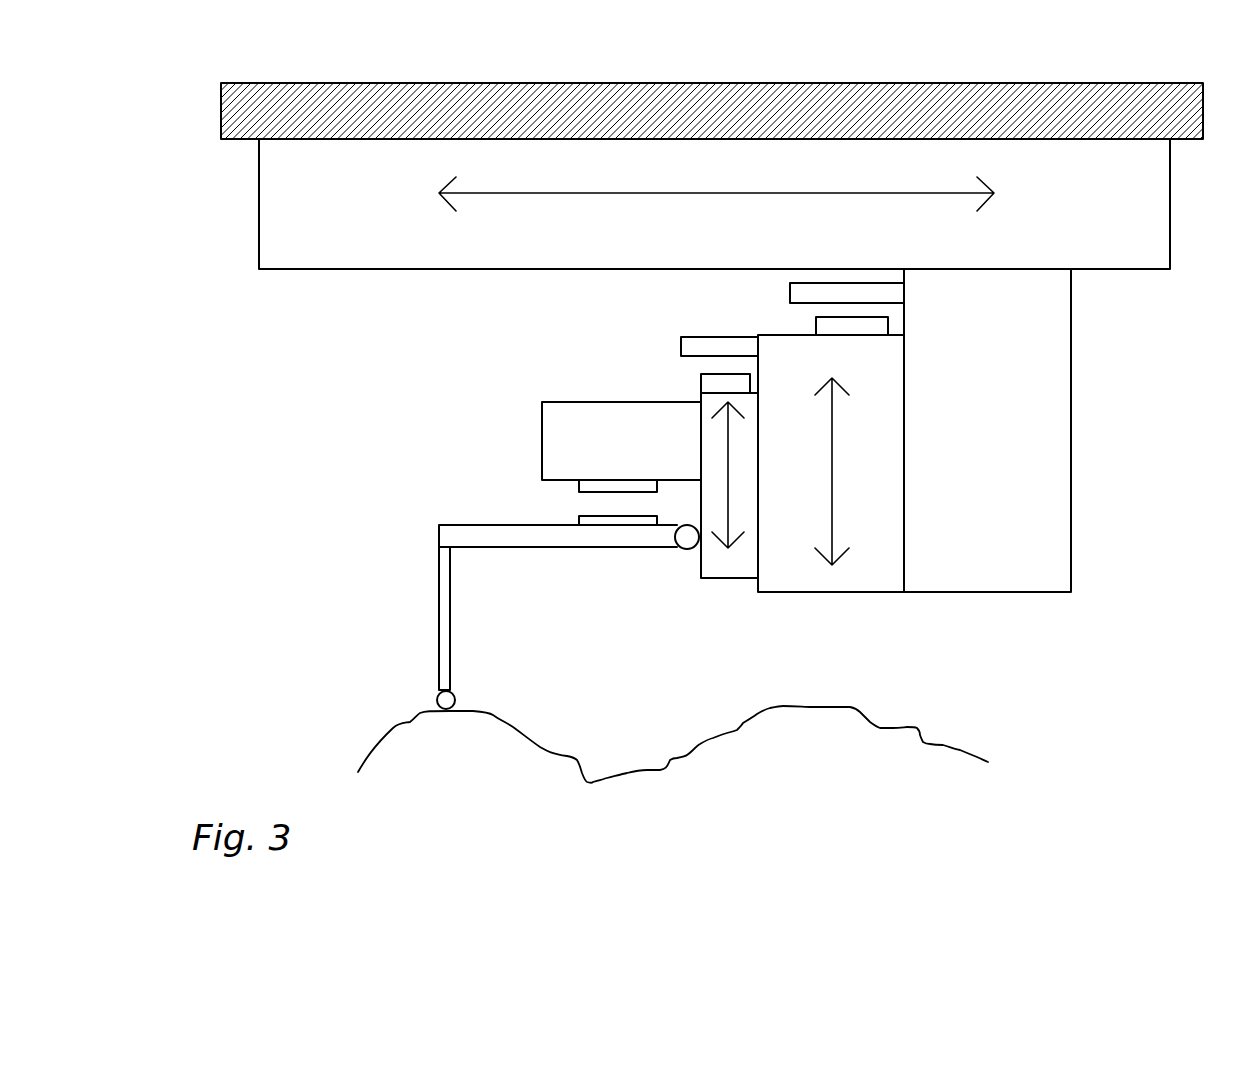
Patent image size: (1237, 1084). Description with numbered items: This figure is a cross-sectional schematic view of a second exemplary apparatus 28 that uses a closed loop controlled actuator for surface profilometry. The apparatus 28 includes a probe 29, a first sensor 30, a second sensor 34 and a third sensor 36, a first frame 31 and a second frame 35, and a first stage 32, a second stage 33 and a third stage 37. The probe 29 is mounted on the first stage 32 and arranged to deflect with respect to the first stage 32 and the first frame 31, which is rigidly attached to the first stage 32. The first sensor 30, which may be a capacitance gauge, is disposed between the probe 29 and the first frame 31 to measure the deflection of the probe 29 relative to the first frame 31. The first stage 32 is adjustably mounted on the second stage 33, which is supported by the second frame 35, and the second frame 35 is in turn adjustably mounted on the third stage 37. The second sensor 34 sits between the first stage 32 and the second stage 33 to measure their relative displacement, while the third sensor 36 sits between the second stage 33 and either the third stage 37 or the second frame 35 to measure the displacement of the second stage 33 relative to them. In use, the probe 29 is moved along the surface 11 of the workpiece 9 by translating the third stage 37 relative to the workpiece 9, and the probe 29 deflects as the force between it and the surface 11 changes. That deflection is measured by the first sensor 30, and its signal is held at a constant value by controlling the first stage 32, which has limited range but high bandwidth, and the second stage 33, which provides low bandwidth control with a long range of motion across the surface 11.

The workpiece 9 is at (878, 782).
The surface 11 is at (880, 725).
The apparatus 28 is at (213, 709).
The probe 29 is at (440, 660).
The first sensor 30 is at (579, 517).
The first frame 31 is at (617, 435).
The first stage 32 is at (728, 562).
The second stage 33 is at (878, 570).
The second sensor 34 is at (701, 374).
The second frame 35 is at (1009, 380).
The third sensor 36 is at (816, 318).
The third stage 37 is at (373, 232).